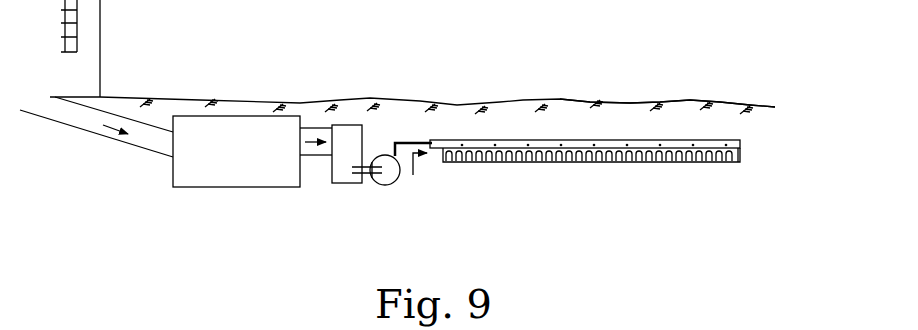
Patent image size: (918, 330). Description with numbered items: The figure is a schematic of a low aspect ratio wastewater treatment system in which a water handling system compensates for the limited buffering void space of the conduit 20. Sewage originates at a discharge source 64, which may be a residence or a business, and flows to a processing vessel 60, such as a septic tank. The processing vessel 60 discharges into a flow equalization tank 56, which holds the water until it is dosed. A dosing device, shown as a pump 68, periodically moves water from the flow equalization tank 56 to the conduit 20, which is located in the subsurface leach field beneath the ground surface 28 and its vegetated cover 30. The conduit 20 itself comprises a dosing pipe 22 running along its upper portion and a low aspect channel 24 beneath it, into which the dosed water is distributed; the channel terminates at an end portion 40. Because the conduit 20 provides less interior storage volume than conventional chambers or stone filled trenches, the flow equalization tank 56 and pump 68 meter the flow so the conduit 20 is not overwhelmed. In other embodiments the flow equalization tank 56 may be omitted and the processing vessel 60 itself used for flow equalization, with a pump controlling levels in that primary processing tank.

The conduit 20 is at (615, 154).
The dosing pipe 22 is at (575, 140).
The low aspect channel 24 is at (610, 162).
The ground surface 28 is at (456, 105).
The grass / turf surface 30 is at (658, 102).
The end cap of panel 40 is at (742, 155).
The flow equalization tank 56 is at (343, 125).
The processing vessel 60 is at (240, 116).
The discharge source 64 is at (100, 47).
The pump 68 is at (390, 185).